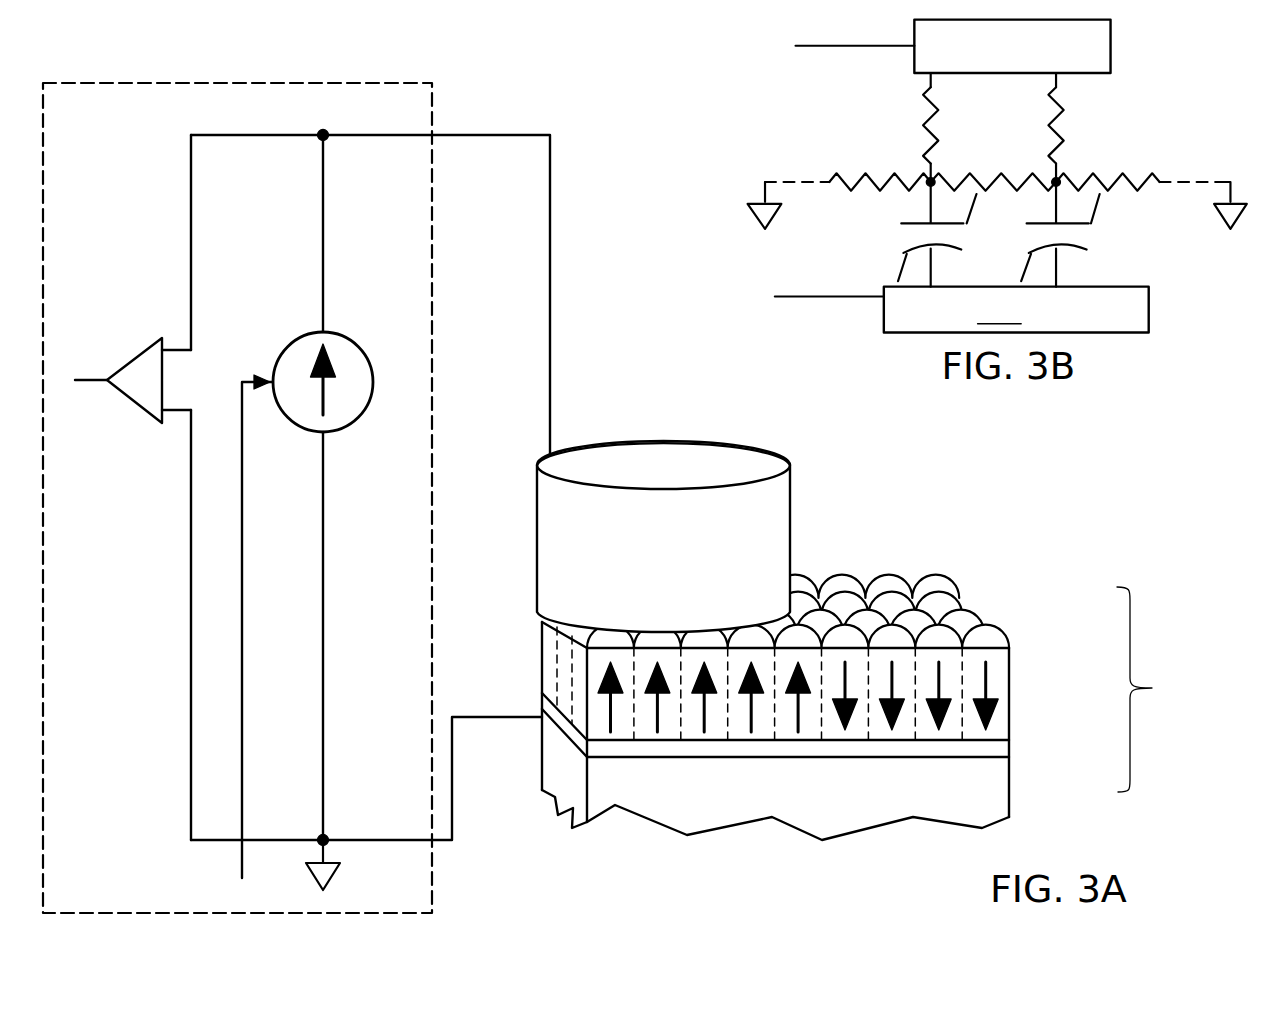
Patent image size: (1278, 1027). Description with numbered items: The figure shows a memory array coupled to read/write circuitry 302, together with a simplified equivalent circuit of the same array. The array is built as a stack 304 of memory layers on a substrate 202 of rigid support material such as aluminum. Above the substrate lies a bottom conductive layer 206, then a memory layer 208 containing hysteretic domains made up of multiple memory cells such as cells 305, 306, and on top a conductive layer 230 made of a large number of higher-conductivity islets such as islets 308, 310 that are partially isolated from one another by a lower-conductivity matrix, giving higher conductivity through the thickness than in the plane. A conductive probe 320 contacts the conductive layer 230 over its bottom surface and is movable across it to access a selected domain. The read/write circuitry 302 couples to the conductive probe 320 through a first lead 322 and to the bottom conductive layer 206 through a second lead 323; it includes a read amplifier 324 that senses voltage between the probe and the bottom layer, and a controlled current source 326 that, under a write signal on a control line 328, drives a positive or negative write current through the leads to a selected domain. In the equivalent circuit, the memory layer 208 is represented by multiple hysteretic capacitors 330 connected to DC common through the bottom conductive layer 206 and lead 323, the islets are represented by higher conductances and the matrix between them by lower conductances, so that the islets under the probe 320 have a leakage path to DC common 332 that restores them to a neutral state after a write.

In FIG. 3A, the read/write circuitry 302 is at (432, 102).
In FIG. 3A, the first lead 322 is at (473, 136).
In FIG. 3B, the first lead 322 is at (845, 42).
In FIG. 3A, the second lead 323 is at (447, 842).
In FIG. 3B, the second lead 323 is at (845, 272).
In FIG. 3A, the read amplifier 324 is at (130, 358).
In FIG. 3A, the controlled current source 326 is at (273, 372).
In FIG. 3A, the control line 328 is at (242, 502).
In FIG. 3A, the conductive probe 320 is at (684, 567).
In FIG. 3B, the conductive probe 320 is at (1075, 40).
In FIG. 3B, the hysteretic capacitors 330 is at (883, 240).
In FIG. 3B, the DC common 332 is at (745, 206).
In FIG. 3A, the bottom conductive layer 206 is at (1010, 745).
In FIG. 3B, the bottom conductive layer 206 is at (1016, 310).
In FIG. 3A, the substrate 202 is at (1010, 787).
In FIG. 3A, the memory layer 208 is at (1009, 672).
In FIG. 3A, the conductive layer 230 is at (1005, 620).
In FIG. 3A, the stack of memory layers 304 is at (1160, 689).
In FIG. 3A, the memory cell 305 is at (810, 732).
In FIG. 3A, the memory cell 306 is at (833, 730).
In FIG. 3A, the islet 308 is at (943, 593).
In FIG. 3A, the islet 310 is at (928, 577).